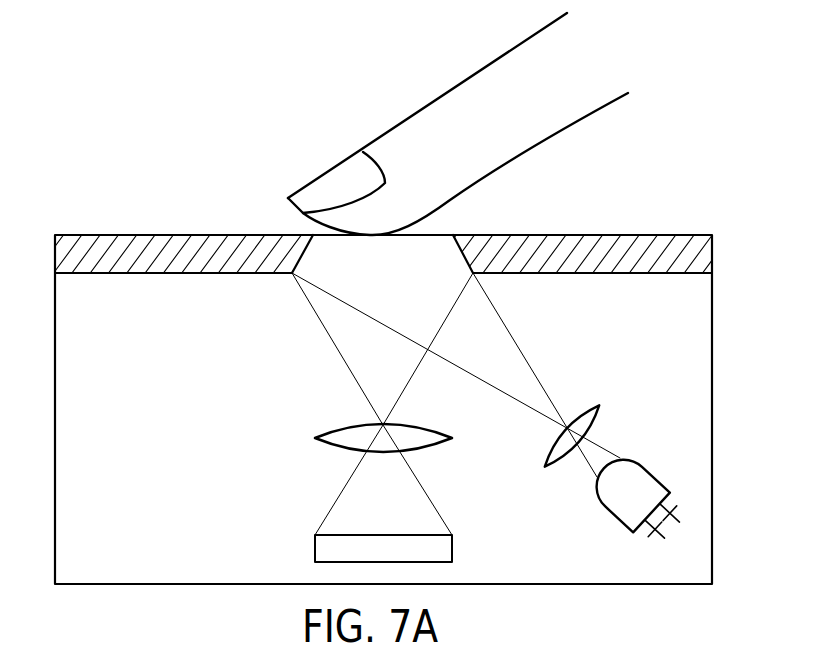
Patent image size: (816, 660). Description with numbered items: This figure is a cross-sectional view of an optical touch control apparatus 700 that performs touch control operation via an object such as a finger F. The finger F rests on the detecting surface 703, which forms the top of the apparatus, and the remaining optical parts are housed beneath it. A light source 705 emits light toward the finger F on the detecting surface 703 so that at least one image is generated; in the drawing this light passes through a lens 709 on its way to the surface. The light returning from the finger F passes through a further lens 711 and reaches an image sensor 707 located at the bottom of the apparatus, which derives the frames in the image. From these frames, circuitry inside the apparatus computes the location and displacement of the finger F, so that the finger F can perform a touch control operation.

The optical touch control apparatus 700 is at (158, 80).
The detecting surface 703 is at (158, 257).
The light source 705 is at (668, 488).
The image sensor 707 is at (315, 543).
The lens 709 is at (588, 407).
The lens 711 is at (340, 450).
The finger F is at (428, 115).